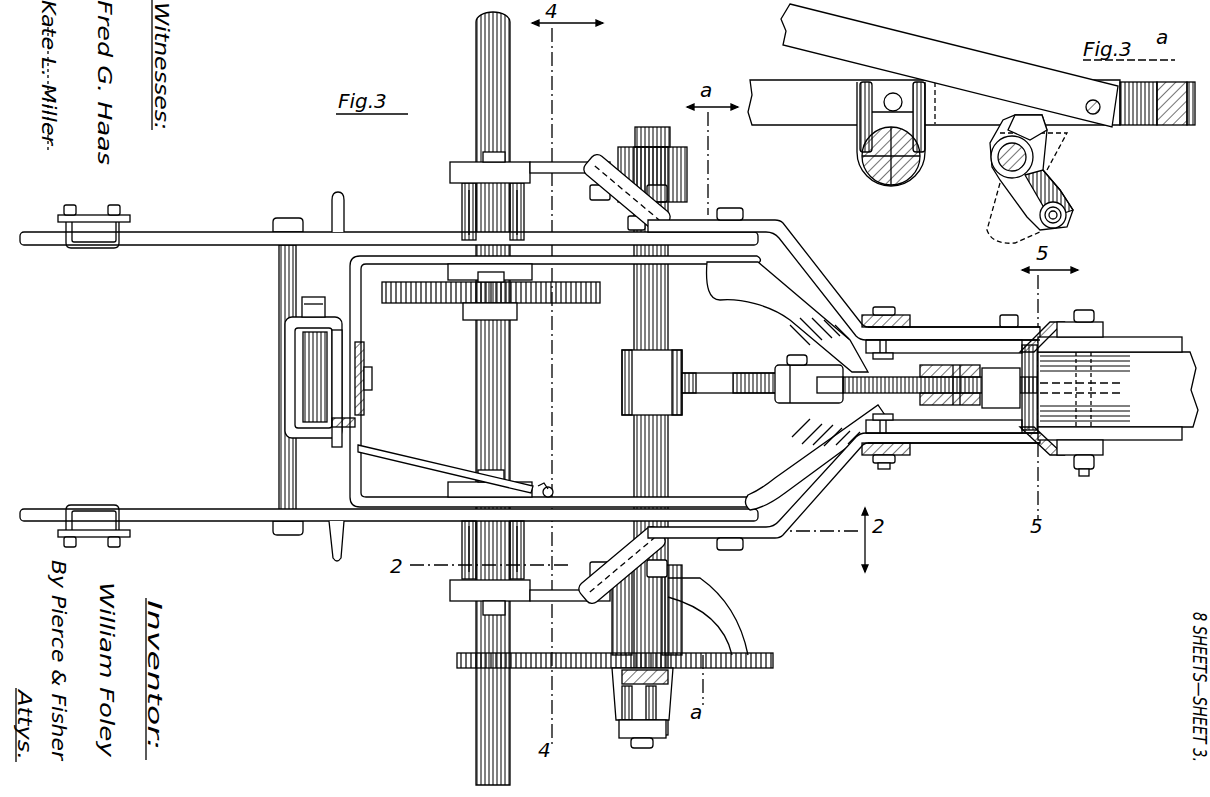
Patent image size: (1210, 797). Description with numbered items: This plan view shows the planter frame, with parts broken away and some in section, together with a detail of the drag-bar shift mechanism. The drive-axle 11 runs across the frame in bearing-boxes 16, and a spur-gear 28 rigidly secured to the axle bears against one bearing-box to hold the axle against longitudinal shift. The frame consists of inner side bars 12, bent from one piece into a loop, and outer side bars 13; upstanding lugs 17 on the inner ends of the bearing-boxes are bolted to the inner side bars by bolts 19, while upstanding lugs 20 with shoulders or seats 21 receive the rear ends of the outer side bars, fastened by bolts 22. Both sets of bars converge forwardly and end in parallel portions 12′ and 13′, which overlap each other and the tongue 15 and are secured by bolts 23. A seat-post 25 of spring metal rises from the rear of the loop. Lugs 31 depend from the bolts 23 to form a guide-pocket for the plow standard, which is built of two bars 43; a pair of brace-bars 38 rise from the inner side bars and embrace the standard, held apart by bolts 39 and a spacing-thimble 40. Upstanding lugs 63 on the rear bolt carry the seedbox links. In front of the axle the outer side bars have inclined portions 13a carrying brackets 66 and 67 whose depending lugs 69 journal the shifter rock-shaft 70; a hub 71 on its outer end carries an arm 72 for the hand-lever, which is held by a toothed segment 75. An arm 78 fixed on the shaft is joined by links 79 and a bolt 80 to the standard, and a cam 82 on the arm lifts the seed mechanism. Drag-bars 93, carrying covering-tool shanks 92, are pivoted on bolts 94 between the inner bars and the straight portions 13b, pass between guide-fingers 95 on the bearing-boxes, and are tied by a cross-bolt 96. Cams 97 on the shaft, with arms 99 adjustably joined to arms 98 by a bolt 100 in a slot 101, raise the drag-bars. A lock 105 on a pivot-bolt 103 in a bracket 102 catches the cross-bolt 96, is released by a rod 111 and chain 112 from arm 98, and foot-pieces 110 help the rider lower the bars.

In FIG. 3, the drive-axle 11 is at (488, 68).
In FIG. 3A, the drive-axle 11 is at (893, 163).
In FIG. 3, the inner side-bars 12 is at (383, 255).
In FIG. 3A, the inner side-bars 12 is at (778, 90).
In FIG. 3, the forwardly-extending parallel portions 12′ is at (1154, 343).
In FIG. 3, the outer side bars 13 is at (557, 167).
In FIG. 3, the forwardly-inclined portions 13a is at (621, 379).
In FIG. 3, the straight portions 13b is at (742, 232).
In FIG. 3, the forwardly-extending parallel portions 13′ is at (950, 332).
In FIG. 3, the tongue 15 is at (1148, 383).
In FIG. 3, the bearing-boxes 16 is at (480, 202).
In FIG. 3A, the bearing-boxes 16 is at (878, 176).
In FIG. 3, the upstanding lugs 17 is at (452, 267).
In FIG. 3, the bolts 19 is at (353, 298).
In FIG. 3A, the bolts 19 is at (889, 94).
In FIG. 3, the upstanding lugs 20 is at (452, 165).
In FIG. 3, the shoulders or seats 21 is at (1010, 387).
In FIG. 3, the bolts 22 is at (500, 152).
In FIG. 3, the bolts 23 is at (890, 310).
In FIG. 3, the seat-post 25 is at (368, 352).
In FIG. 3, the spur-gear 28 is at (569, 307).
In FIG. 3, the lugs 31 is at (905, 345).
In FIG. 3, the brace-bars 38 is at (760, 300).
In FIG. 3, the bolts 39 is at (903, 347).
In FIG. 3, the spacing-thimble 40 is at (807, 367).
In FIG. 3, the bars 43 is at (968, 408).
In FIG. 3, the upstanding lugs 63 is at (863, 316).
In FIG. 3, the bracket 66 is at (670, 600).
In FIG. 3, the bracket 67 is at (637, 190).
In FIG. 3, the depending lugs 69 is at (687, 167).
In FIG. 3, the shifter rock-shaft 70 is at (641, 309).
In FIG. 3A, the shifter rock-shaft 70 is at (996, 160).
In FIG. 3, the hub 71 is at (667, 703).
In FIG. 3, the upstanding lug or arm 72 is at (673, 677).
In FIG. 3, the segment 75 is at (773, 663).
In FIG. 3, the arm 78 is at (662, 382).
In FIG. 3, the links 79 is at (810, 403).
In FIG. 3, the bolt 80 is at (933, 408).
In FIG. 3, the cam 82 is at (723, 387).
In FIG. 3, the shanks 92 is at (98, 220).
In FIG. 3, the drag-bars 93 is at (202, 240).
In FIG. 3A, the drag-bars 93 is at (915, 43).
In FIG. 3, the pivot-bolts 94 is at (740, 202).
In FIG. 3, the guide-fingers 95 is at (470, 222).
In FIG. 3A, the guide-fingers 95 is at (863, 104).
In FIG. 3, the cross-bolt 96 is at (283, 270).
In FIG. 3A, the cams 97 is at (1032, 127).
In FIG. 3A, the arms 98 is at (1037, 190).
In FIG. 3A, the arms 99 is at (1095, 102).
In FIG. 3A, the bolt 100 is at (1062, 218).
In FIG. 3A, the slot 101 is at (1066, 210).
In FIG. 3, the bracket 102 is at (335, 393).
In FIG. 3, the pivot-bolt 103 is at (310, 378).
In FIG. 3, the lock 105 is at (295, 323).
In FIG. 3, the foot-pieces 110 is at (345, 205).
In FIG. 3, the rod 111 is at (385, 448).
In FIG. 3, the chain 112 is at (563, 490).